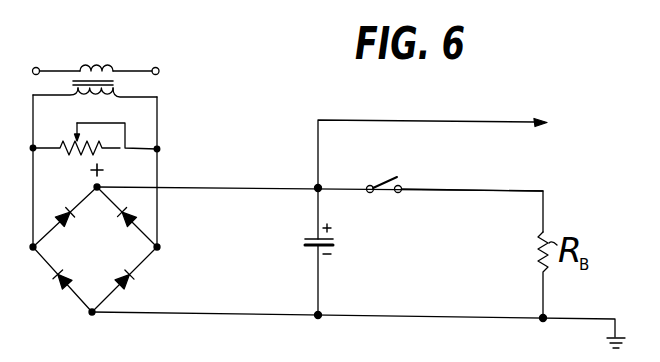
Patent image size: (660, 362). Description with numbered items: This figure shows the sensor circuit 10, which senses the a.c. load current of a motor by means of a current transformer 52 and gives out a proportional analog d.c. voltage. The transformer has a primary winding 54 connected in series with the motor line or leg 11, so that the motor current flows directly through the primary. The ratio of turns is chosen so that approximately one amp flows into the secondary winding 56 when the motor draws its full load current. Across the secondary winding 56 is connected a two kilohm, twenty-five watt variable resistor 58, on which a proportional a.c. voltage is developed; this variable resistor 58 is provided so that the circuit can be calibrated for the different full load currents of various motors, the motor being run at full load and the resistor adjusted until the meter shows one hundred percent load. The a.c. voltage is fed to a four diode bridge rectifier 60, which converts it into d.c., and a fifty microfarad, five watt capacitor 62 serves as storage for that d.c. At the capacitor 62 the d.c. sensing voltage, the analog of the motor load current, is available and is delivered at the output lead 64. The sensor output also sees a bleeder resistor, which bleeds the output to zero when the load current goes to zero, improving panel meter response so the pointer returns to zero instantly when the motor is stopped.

The sensor circuit 10 is at (203, 148).
The motor line or leg 11 is at (133, 71).
The current transformer 52 is at (142, 97).
The primary winding 54 is at (100, 67).
The secondary winding 56 is at (83, 97).
The variable resistor 58 is at (74, 155).
The four diode bridge rectifier 60 is at (106, 262).
The capacitor 62 is at (306, 240).
The output lead 64 is at (409, 121).